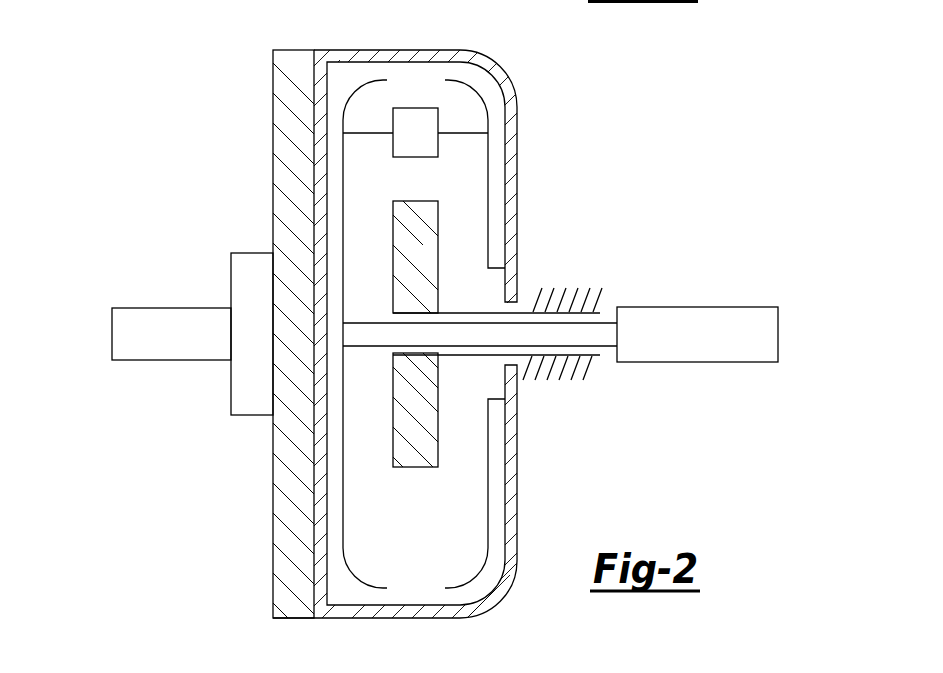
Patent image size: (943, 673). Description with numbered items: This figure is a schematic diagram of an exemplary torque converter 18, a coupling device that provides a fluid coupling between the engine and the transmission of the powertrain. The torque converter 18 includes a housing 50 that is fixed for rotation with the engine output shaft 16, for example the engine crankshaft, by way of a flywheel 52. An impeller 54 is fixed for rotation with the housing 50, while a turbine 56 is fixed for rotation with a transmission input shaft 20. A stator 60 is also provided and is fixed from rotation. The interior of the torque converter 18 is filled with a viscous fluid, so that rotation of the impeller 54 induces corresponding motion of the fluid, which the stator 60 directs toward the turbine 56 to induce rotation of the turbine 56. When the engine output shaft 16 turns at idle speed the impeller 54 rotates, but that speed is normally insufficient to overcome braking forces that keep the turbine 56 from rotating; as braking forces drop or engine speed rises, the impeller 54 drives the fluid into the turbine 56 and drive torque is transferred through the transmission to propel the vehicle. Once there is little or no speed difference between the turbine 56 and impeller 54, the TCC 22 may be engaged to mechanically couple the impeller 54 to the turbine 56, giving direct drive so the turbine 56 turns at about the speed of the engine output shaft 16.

The engine output shaft 16 is at (112, 335).
The torque converter 18 is at (608, 402).
The transmission input shaft 20 is at (698, 307).
The TCC 22 is at (414, 108).
The housing 50 is at (438, 50).
The flywheel 52 is at (273, 121).
The impeller 54 is at (488, 222).
The turbine 56 is at (343, 541).
The stator 60 is at (415, 467).